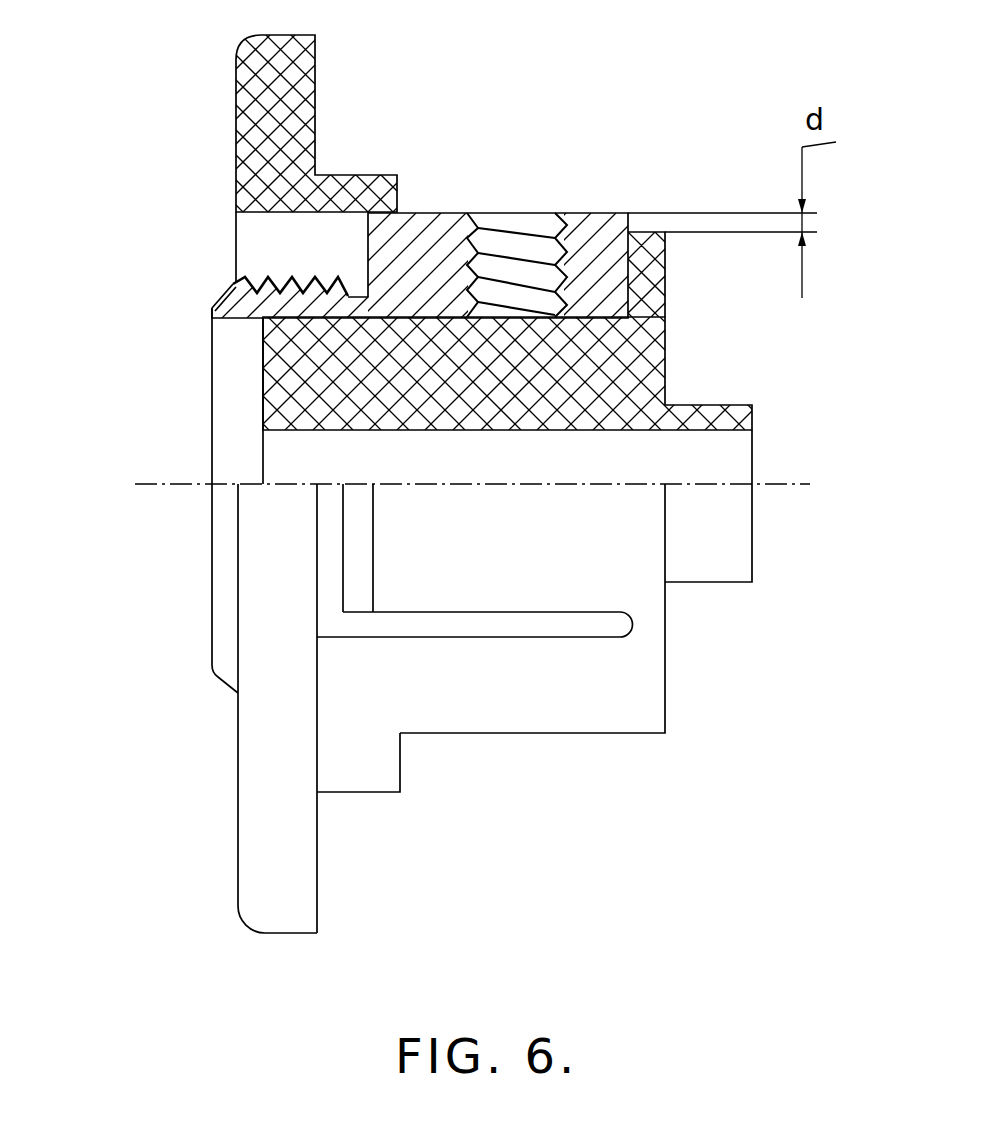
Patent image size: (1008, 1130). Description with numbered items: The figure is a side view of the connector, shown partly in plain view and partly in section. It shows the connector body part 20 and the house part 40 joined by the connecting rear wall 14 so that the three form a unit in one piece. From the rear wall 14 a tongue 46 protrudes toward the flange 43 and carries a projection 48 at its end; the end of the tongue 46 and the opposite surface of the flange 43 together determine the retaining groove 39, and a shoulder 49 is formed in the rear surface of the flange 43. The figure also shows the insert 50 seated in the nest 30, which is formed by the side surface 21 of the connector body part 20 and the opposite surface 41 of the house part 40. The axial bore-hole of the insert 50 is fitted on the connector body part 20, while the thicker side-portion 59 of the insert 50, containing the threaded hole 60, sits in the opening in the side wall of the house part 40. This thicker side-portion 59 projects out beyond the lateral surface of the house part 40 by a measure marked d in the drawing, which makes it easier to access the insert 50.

The rear wall 14 is at (645, 305).
The connector body part 20 is at (290, 388).
The side surface 21 is at (289, 311).
The nest 30 is at (282, 253).
The retaining groove 39 is at (326, 598).
The house part 40 is at (570, 703).
The opposite surface 41 is at (283, 218).
The flange 43 is at (290, 52).
The tongue 46 is at (463, 580).
The projection 48 is at (357, 549).
The shoulder 49 is at (387, 792).
The insert 50 is at (230, 443).
The thicker side-portion 59 is at (427, 233).
The threaded hole 60 is at (527, 208).